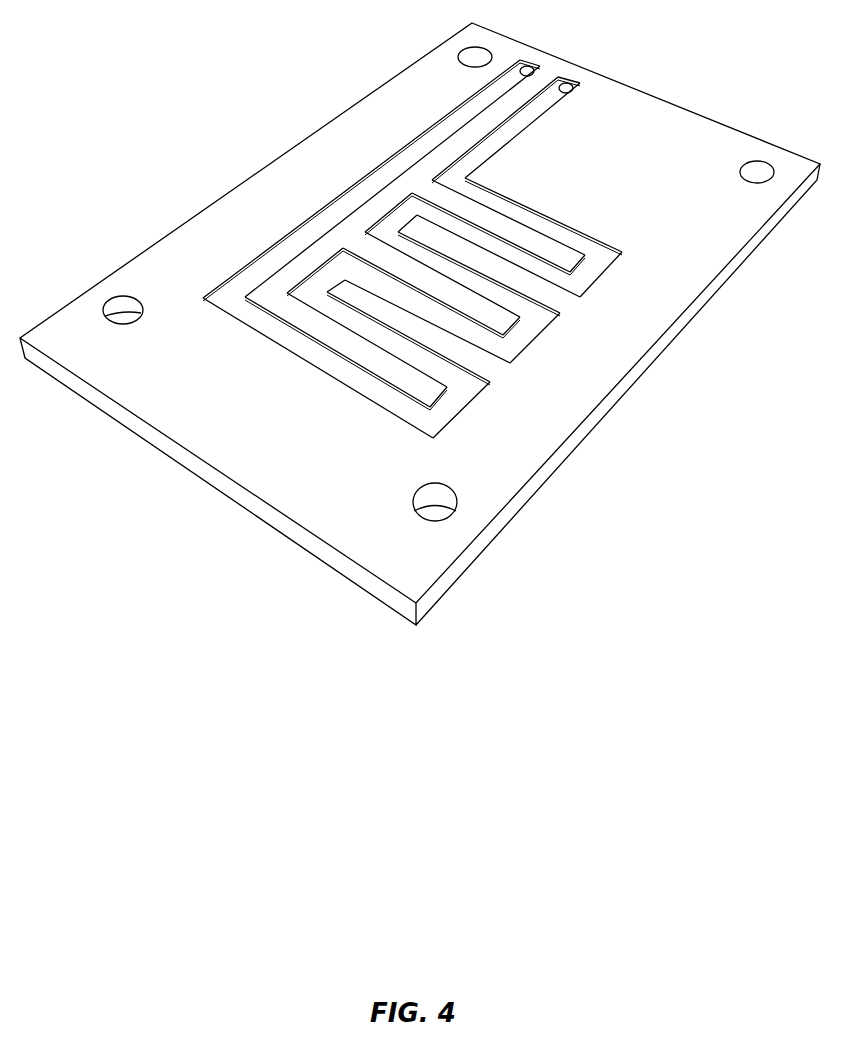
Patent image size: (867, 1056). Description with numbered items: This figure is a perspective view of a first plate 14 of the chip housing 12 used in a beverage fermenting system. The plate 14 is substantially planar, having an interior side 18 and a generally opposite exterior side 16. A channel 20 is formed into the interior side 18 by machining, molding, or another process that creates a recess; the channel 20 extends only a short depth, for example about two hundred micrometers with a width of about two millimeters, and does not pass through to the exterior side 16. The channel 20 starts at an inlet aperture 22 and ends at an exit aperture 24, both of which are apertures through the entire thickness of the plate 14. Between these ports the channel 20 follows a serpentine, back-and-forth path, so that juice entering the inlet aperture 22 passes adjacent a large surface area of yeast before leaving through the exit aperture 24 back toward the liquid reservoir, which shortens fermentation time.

The chip housing 12 is at (420, 323).
The first plate 14 is at (420, 324).
The exterior side 16 is at (623, 395).
The interior side 18 is at (655, 125).
The channel 20 is at (435, 230).
The inlet aperture 22 is at (576, 83).
The exit aperture 24 is at (528, 66).